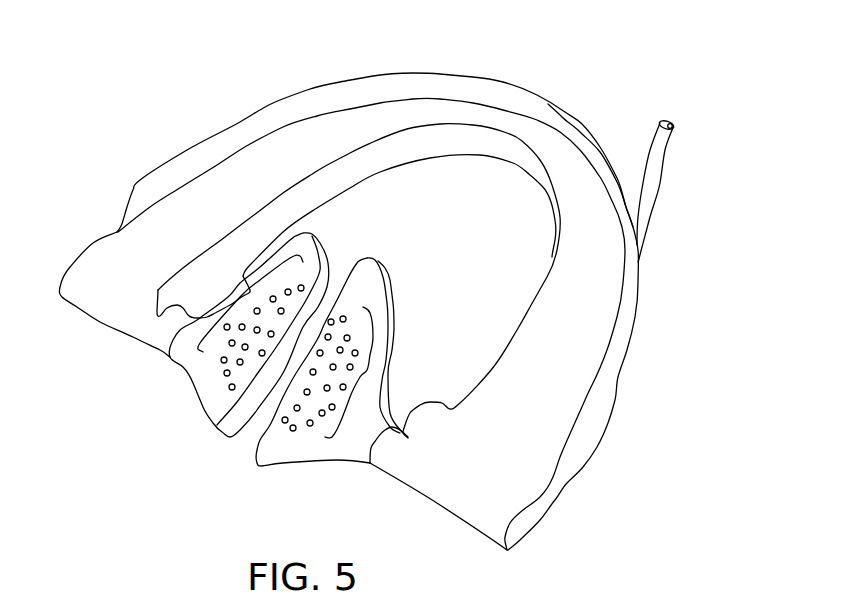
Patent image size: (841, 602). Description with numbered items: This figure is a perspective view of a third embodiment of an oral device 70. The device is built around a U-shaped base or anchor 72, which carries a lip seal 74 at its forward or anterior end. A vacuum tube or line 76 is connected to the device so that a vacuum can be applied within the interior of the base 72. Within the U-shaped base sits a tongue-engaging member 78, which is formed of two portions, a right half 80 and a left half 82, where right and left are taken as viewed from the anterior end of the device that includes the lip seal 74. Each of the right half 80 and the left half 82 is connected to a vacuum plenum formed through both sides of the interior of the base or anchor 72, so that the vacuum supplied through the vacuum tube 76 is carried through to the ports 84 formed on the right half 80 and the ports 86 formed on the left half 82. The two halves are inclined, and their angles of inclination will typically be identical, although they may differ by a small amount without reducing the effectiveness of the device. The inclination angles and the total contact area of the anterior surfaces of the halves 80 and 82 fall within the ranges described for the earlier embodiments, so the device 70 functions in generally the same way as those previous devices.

The oral device 70 is at (383, 45).
The U-shaped base or anchor 72 is at (612, 372).
The lip seal 74 is at (503, 81).
The vacuum tube or line 76 is at (657, 182).
The tongue-engaging member 78 is at (175, 431).
The right half 80 is at (308, 250).
The left half 82 is at (367, 273).
The ports 84 is at (370, 380).
The ports 86 is at (243, 293).